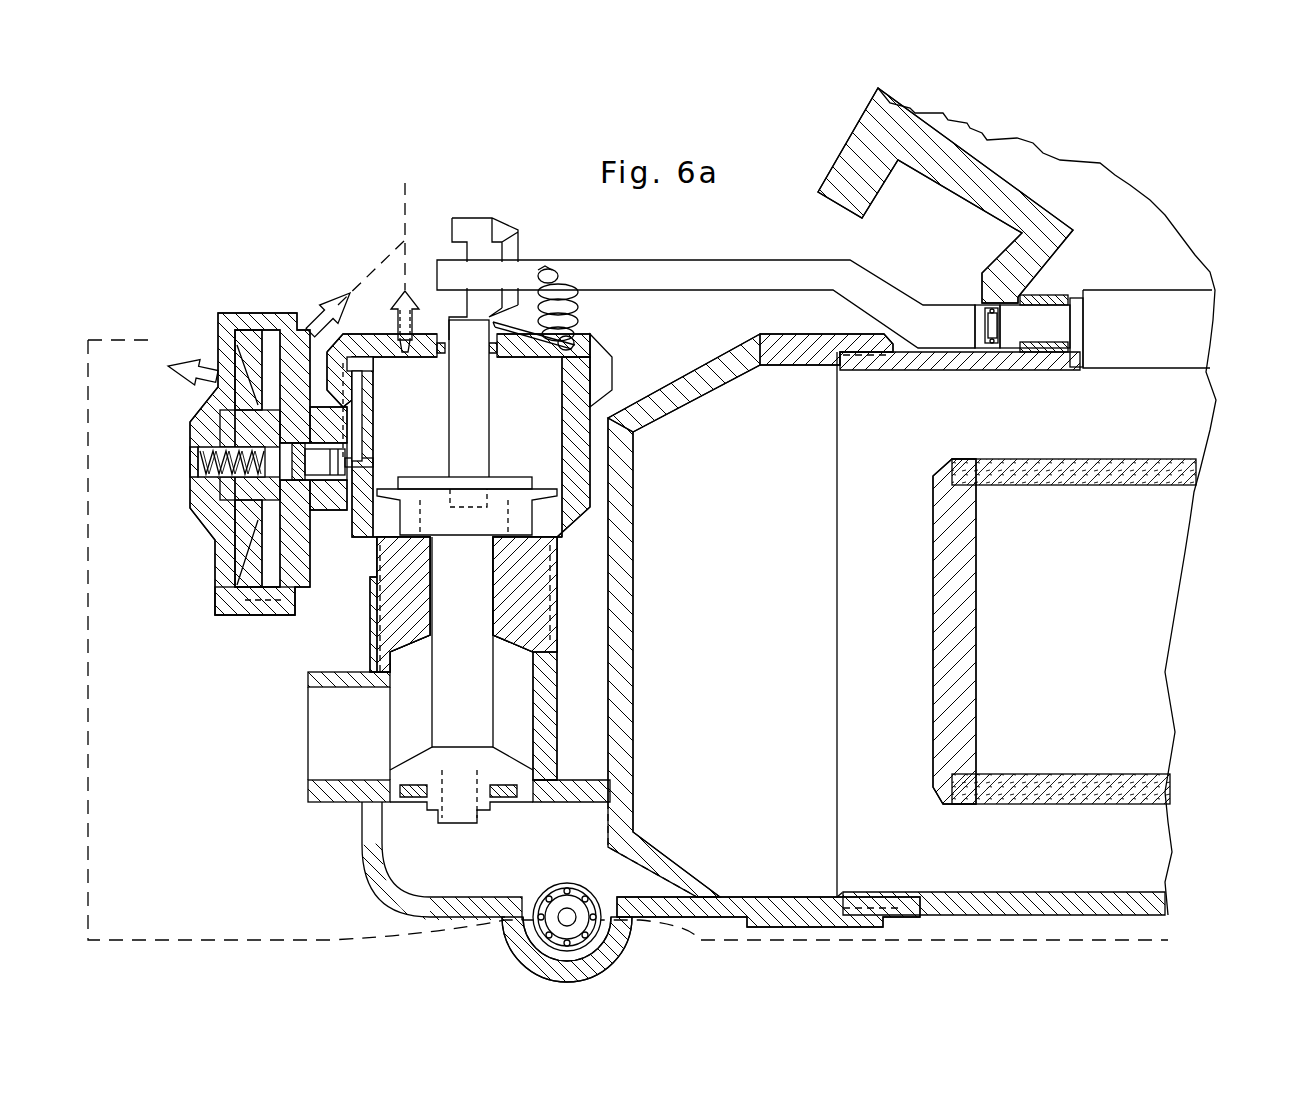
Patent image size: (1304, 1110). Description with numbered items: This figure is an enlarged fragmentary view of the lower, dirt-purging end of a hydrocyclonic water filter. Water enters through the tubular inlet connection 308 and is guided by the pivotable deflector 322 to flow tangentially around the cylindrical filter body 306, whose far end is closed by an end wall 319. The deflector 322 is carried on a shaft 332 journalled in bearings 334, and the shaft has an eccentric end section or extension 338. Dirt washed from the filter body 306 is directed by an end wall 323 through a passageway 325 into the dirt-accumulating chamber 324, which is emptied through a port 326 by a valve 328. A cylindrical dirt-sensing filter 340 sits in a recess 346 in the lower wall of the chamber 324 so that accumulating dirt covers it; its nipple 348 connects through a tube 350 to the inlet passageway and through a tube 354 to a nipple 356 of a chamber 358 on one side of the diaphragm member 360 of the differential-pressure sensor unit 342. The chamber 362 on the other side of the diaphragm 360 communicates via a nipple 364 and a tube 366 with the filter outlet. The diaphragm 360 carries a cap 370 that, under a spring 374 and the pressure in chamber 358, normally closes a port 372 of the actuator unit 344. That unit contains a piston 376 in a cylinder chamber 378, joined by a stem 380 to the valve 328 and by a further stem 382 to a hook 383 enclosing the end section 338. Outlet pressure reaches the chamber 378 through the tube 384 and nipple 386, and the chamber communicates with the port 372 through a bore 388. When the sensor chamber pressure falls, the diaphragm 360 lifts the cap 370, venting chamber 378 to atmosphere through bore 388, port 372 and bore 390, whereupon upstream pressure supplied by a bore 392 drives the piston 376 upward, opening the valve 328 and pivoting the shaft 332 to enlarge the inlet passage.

The filter body 306 is at (988, 462).
The inlet connection 308 is at (950, 190).
The end wall 319 is at (935, 566).
The deflector 322 is at (1160, 350).
The end wall 323 is at (637, 548).
The chamber 324 is at (486, 850).
The passageway 325 is at (660, 878).
The port 326 is at (320, 712).
The valve 328 is at (400, 785).
The shaft 332 is at (948, 325).
The bearings 334 is at (1043, 297).
The extension 338 is at (580, 268).
The dirt-sensing filter 340 is at (567, 905).
The differential-pressure sensor unit 342 is at (270, 421).
The actuator unit 344 is at (384, 300).
The recess 346 is at (535, 942).
The nipple 348 is at (548, 900).
The tube 350 is at (692, 940).
The tube 354 is at (90, 735).
The nipple 356 is at (198, 360).
The chamber 358 is at (220, 330).
The diaphragm member 360 is at (274, 332).
The chamber 362 is at (278, 563).
The nipple 364 is at (335, 298).
The tube 366 is at (409, 196).
The cap 370 is at (322, 490).
The port 372 is at (372, 463).
The spring 374 is at (197, 468).
The piston 376 is at (385, 492).
The cylinder chamber 378 is at (469, 557).
The stem 380 is at (461, 653).
The stem 382 is at (482, 402).
The hook 383 is at (470, 220).
The tube 384 is at (405, 270).
The nipple 386 is at (396, 316).
The bore 388 is at (372, 368).
The bore 390 is at (296, 595).
The bore 392 is at (555, 527).